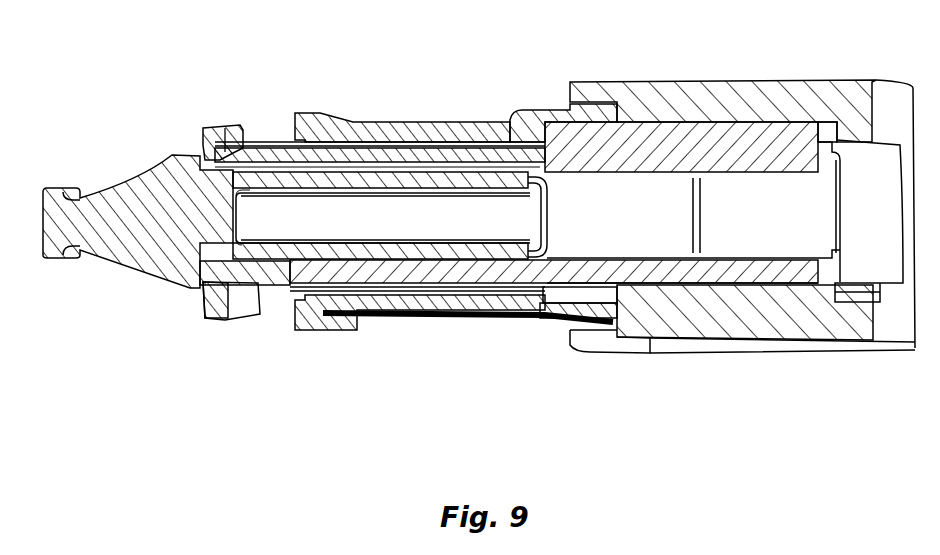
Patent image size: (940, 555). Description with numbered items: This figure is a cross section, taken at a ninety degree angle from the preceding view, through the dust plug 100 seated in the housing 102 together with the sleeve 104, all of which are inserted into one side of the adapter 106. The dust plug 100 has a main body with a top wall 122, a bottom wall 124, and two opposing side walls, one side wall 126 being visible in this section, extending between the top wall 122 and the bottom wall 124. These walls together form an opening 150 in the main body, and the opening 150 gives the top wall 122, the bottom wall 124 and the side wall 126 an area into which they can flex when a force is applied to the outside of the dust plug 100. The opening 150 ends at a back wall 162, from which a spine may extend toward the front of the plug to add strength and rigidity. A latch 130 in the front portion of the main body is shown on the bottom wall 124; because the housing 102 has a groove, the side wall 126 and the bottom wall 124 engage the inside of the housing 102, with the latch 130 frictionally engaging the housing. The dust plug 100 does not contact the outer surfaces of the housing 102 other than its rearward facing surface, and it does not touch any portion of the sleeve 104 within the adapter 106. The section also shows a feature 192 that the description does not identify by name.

The dust plug 100 is at (55, 187).
The housing 102 is at (213, 125).
The sleeve 104 is at (557, 327).
The adapter 106 is at (763, 80).
The top wall 122 is at (393, 187).
The bottom wall 124 is at (440, 300).
The side wall 126 is at (548, 218).
The latch 130 is at (510, 118).
The opening 150 is at (395, 290).
The back wall 162 is at (240, 212).
The sleeve 192 is at (607, 157).